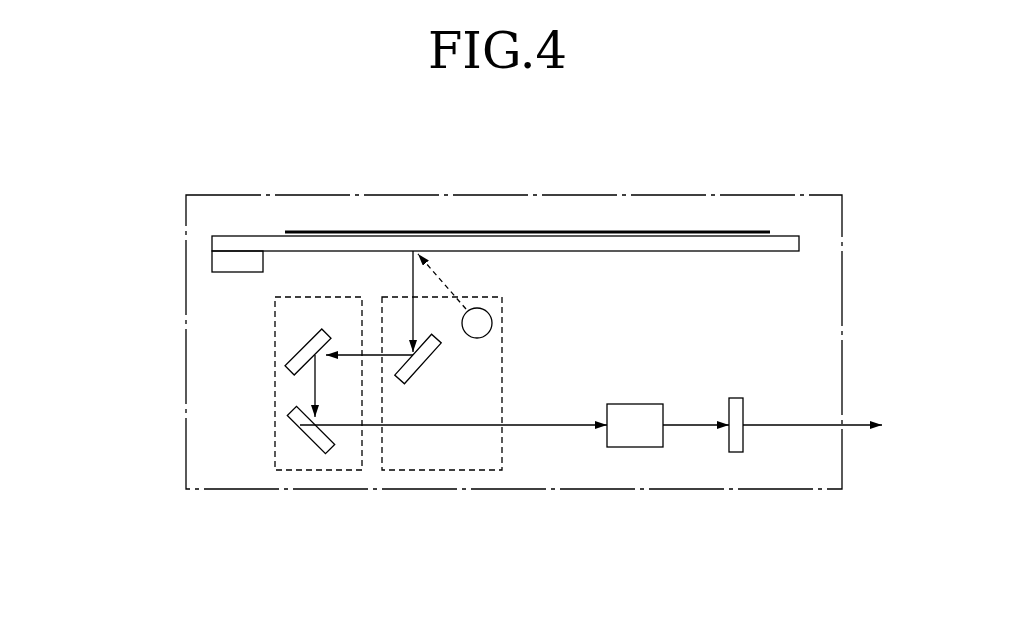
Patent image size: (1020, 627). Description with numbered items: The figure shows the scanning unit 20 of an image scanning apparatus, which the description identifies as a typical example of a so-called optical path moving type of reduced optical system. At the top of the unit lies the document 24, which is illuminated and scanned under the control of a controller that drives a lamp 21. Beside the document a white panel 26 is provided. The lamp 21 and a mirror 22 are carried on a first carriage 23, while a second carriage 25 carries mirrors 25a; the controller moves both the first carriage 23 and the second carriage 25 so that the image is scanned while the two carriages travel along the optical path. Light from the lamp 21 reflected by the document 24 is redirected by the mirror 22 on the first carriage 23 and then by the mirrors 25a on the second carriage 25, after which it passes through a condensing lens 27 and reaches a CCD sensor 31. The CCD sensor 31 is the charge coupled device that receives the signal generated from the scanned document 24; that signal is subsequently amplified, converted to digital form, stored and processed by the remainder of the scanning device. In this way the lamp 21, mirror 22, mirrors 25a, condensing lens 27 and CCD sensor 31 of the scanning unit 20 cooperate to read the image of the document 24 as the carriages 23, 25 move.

The scanning unit 20 is at (797, 195).
The lamp 21 is at (477, 323).
The mirror 22 is at (410, 373).
The first carriage 23 is at (440, 470).
The document 24 is at (371, 233).
The second carriage 25 is at (277, 403).
The mirrors 25a is at (300, 425).
The white panel 26 is at (214, 257).
The condensing lens 27 is at (632, 415).
The CCD sensor 31 is at (735, 408).